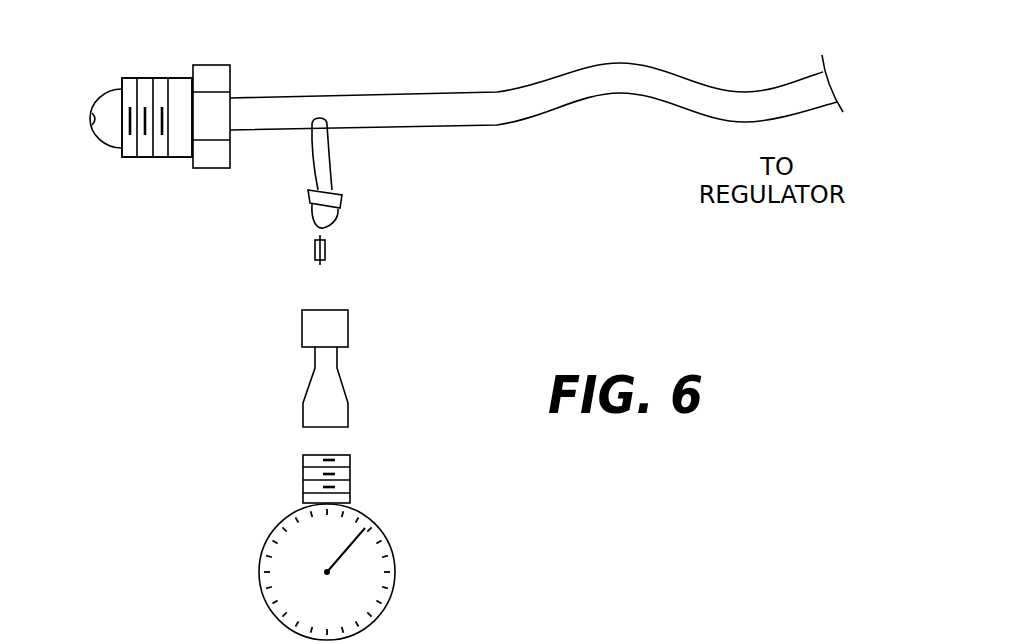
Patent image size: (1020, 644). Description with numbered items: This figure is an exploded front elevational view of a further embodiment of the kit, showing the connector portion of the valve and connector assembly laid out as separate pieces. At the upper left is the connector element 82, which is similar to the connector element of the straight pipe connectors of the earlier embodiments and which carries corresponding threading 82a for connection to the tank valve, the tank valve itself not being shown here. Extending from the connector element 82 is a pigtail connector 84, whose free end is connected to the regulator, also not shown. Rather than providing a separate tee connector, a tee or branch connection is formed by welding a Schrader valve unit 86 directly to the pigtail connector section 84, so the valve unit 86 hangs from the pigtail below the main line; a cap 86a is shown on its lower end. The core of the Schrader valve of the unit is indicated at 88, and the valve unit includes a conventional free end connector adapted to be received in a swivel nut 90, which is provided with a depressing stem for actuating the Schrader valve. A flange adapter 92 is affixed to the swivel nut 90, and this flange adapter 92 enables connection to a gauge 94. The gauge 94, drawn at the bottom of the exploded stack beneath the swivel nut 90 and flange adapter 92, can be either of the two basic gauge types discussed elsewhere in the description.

The connector element 82 is at (158, 78).
The threading 82a is at (147, 157).
The pigtail connector 84 is at (380, 95).
The Schrader valve unit 86 is at (325, 162).
The cap 86a is at (335, 215).
The core of the Schrader valve 88 is at (325, 256).
The swivel nut 90 is at (348, 320).
The flange adapter 92 is at (349, 396).
The gauge 94 is at (378, 522).